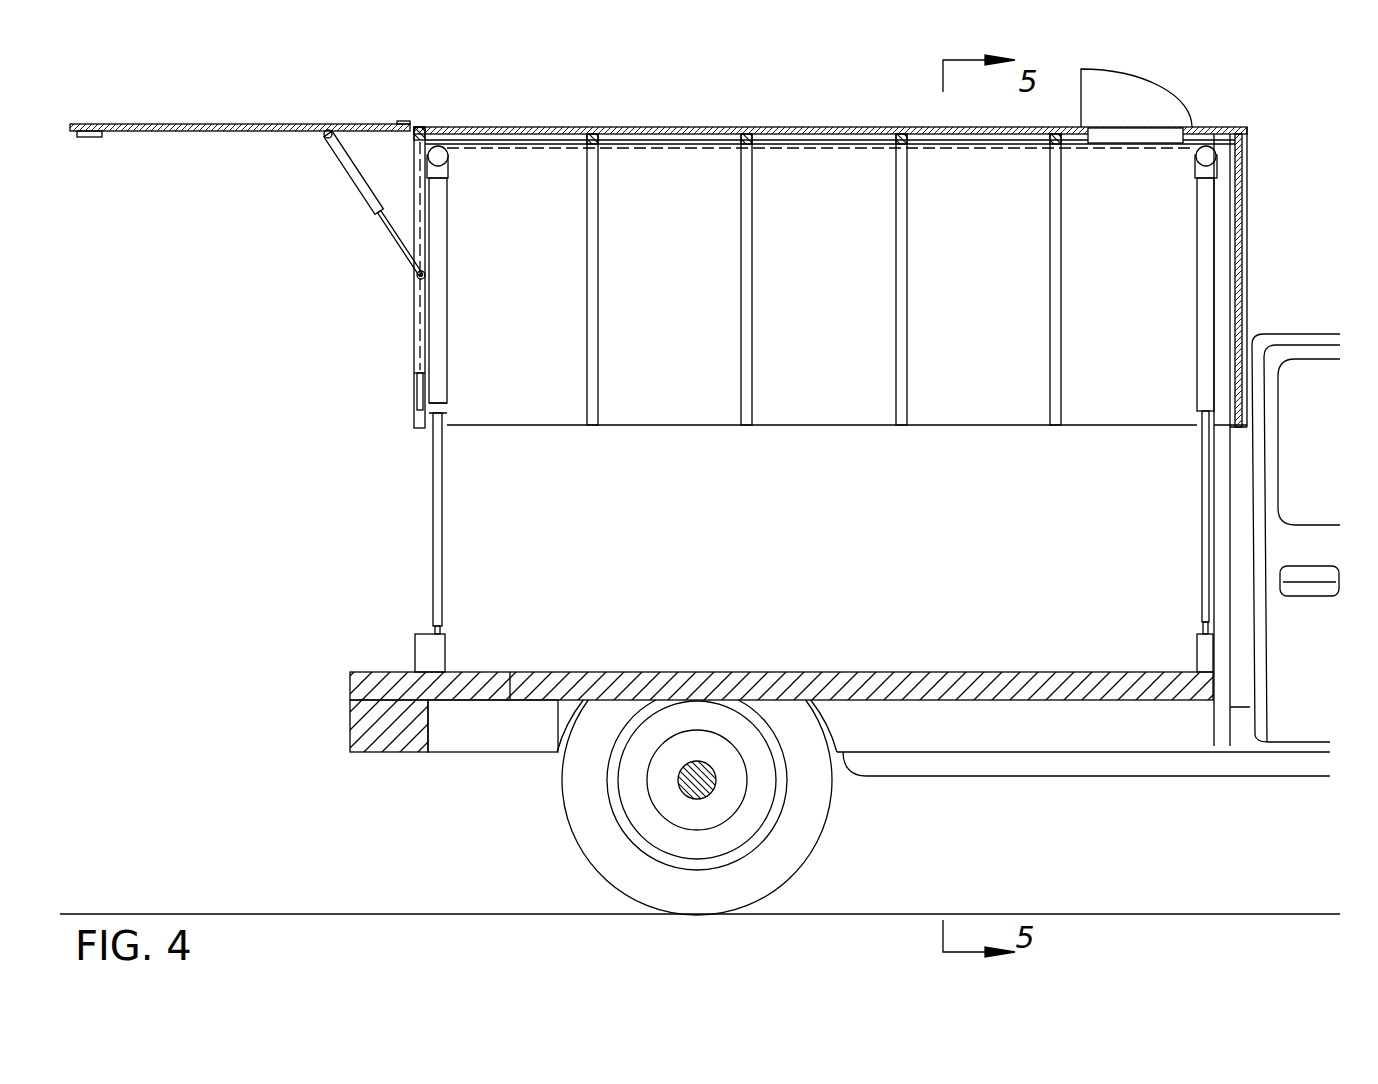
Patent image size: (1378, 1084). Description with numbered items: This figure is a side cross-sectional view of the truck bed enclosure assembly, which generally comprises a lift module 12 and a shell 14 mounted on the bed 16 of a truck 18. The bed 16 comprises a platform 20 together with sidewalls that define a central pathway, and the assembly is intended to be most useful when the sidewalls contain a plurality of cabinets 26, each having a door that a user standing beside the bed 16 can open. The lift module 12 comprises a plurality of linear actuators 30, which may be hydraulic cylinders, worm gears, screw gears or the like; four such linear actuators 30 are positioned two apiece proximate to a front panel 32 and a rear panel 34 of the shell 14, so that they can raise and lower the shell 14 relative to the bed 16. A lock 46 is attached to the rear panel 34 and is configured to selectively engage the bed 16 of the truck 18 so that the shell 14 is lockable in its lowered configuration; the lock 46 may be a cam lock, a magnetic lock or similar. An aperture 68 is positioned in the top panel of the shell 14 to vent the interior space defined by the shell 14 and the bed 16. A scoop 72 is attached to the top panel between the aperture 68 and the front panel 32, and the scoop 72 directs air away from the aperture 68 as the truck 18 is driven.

The lift module 12 is at (1208, 293).
The shell 14 is at (790, 127).
The bed 16 is at (510, 700).
The truck 18 is at (1296, 334).
The platform 20 is at (582, 672).
The cabinet 26 is at (360, 197).
The linear actuator 30 is at (1200, 528).
The front panel 32 is at (1248, 208).
The rear panel 34 is at (219, 124).
The lock 46 is at (85, 137).
The aperture 68 is at (1145, 135).
The scoop 72 is at (1135, 80).